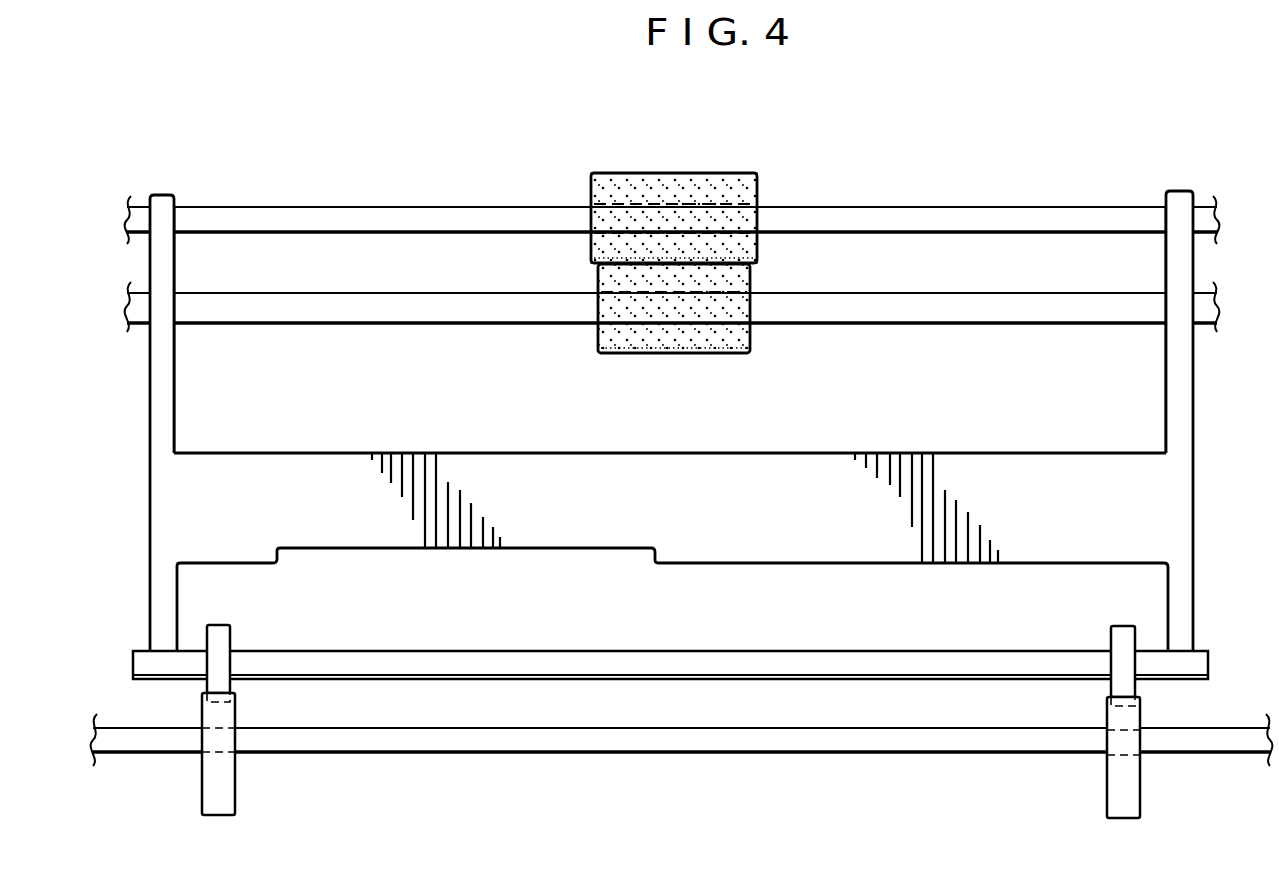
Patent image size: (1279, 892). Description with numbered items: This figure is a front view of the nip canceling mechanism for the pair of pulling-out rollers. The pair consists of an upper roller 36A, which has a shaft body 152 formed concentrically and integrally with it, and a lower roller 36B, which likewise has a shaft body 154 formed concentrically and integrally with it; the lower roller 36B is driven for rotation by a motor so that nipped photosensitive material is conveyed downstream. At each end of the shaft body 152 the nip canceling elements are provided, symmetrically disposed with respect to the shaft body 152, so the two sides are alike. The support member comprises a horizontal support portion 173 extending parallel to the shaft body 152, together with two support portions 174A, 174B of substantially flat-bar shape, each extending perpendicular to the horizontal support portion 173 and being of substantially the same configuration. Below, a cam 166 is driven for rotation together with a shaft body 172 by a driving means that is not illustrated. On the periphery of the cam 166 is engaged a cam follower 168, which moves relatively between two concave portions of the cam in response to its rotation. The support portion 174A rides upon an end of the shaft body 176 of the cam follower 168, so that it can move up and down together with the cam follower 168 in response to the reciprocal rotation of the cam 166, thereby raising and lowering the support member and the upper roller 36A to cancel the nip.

The upper roller 36A is at (697, 182).
The lower roller 36B is at (705, 342).
The shaft body 152 is at (512, 218).
The shaft body 154 is at (504, 308).
The horizontal support portion 173 is at (765, 466).
The support portion 174A is at (1196, 464).
The support portion 174B is at (157, 432).
The shaft body 176 is at (966, 662).
The cam follower 168 is at (232, 640).
The cam 166 is at (228, 795).
The shaft body 172 is at (966, 752).